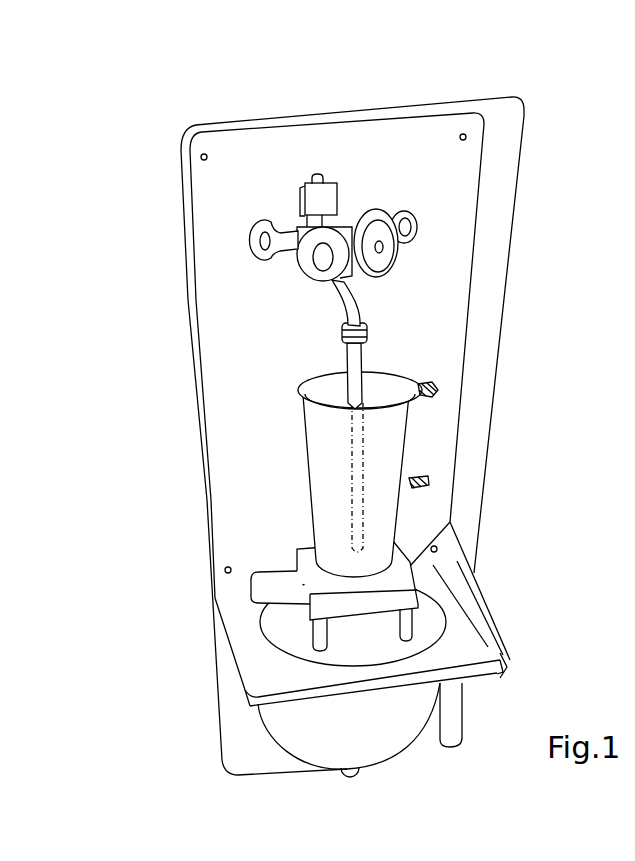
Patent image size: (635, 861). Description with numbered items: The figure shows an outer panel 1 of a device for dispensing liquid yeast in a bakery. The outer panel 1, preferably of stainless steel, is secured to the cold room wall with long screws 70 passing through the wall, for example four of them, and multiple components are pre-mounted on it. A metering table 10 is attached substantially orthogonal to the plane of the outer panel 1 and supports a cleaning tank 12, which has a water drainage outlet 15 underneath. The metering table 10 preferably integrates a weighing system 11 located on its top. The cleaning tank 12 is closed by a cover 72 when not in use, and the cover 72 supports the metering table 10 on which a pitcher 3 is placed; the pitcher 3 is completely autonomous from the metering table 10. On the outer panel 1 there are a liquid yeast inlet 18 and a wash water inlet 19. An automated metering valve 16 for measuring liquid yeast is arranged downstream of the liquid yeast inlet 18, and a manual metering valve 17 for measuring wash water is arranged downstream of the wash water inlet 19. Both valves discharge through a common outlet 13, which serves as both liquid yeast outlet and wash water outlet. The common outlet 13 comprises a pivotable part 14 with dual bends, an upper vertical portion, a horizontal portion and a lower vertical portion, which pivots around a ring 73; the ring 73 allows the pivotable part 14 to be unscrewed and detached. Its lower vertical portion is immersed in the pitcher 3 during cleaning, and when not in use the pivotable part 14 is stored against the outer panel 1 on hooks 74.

The outer panel 1 is at (447, 190).
The pitcher 3 is at (392, 442).
The metering table 10 is at (490, 604).
The weighing system 11 is at (359, 601).
The cleaning tank 12 is at (427, 717).
The common outlet 13 is at (354, 312).
The pivotable part 14 is at (363, 371).
The water drainage outlet 15 is at (350, 774).
The automated metering valve 16 is at (292, 204).
The manual metering valve 17 is at (373, 193).
The liquid yeast inlet 18 is at (280, 255).
The wash water inlet 19 is at (417, 236).
The long screws 70 is at (201, 160).
The cover 72 is at (415, 648).
The ring 73 is at (341, 334).
The hooks 74 is at (440, 392).